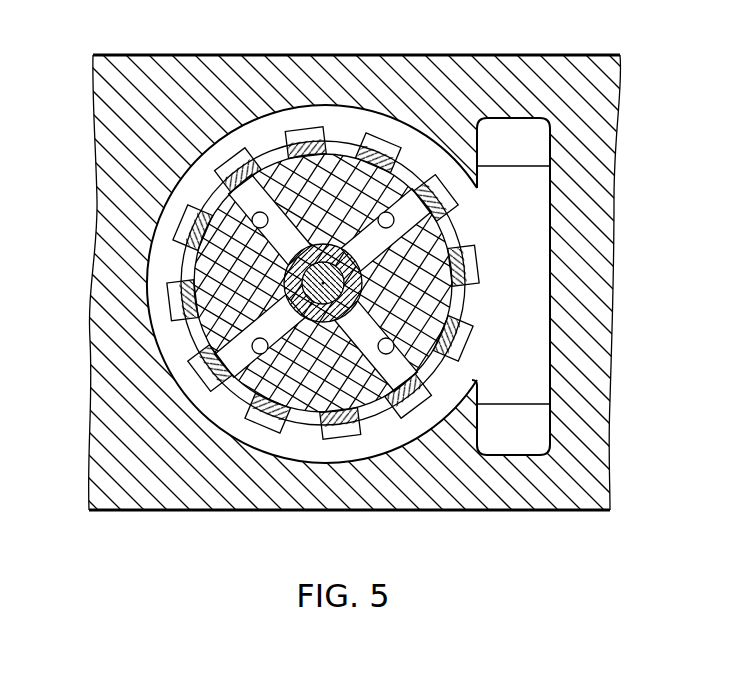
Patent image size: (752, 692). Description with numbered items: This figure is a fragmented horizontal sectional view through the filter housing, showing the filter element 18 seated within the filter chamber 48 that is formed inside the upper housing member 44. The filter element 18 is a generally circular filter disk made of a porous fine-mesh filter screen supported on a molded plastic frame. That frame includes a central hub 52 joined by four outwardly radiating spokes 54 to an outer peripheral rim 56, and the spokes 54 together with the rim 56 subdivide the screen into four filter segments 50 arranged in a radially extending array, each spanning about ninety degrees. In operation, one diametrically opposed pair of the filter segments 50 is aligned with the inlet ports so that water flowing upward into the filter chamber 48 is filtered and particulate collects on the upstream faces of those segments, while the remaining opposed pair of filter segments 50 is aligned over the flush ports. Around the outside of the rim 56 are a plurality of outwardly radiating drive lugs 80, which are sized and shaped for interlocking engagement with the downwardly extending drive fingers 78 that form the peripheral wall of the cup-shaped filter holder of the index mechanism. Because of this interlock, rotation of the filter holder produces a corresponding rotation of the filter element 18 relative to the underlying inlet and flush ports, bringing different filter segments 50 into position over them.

The filter element 18 is at (206, 338).
The upper housing member 44 is at (530, 63).
The filter chamber 48 is at (516, 365).
The filter segments 50 is at (335, 170).
The central hub 52 is at (323, 246).
The spokes 54 is at (416, 126).
The outer peripheral rim 56 is at (272, 150).
The drive fingers 78 is at (212, 150).
The drive lugs 80 is at (203, 200).